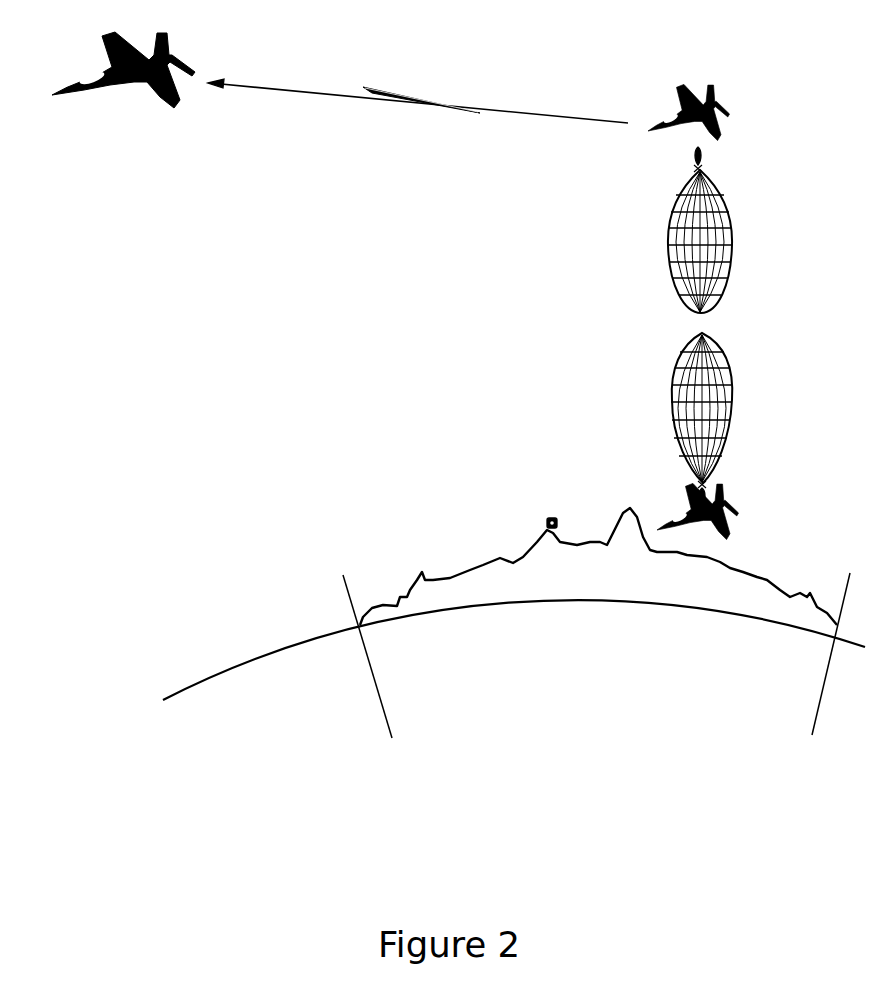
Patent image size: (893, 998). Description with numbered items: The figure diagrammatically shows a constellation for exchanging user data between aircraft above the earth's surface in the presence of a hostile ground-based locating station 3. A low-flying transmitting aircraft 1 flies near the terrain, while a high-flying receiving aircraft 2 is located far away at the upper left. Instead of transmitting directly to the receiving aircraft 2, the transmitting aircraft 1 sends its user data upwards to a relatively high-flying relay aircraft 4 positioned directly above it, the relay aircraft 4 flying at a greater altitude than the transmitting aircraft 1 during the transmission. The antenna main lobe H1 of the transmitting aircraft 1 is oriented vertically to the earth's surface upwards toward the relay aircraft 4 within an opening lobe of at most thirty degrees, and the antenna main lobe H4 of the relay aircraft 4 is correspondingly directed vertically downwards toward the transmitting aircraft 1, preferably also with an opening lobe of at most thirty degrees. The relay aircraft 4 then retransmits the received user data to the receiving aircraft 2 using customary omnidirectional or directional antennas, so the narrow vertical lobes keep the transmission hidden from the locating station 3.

The low-flying transmitting aircraft 1 is at (760, 506).
The high-flying receiving aircraft 2 is at (66, 48).
The locating station 3 is at (534, 518).
The relay aircraft 4 is at (758, 106).
The antenna main lobe H4 is at (668, 234).
The antenna main lobe H1 is at (672, 402).